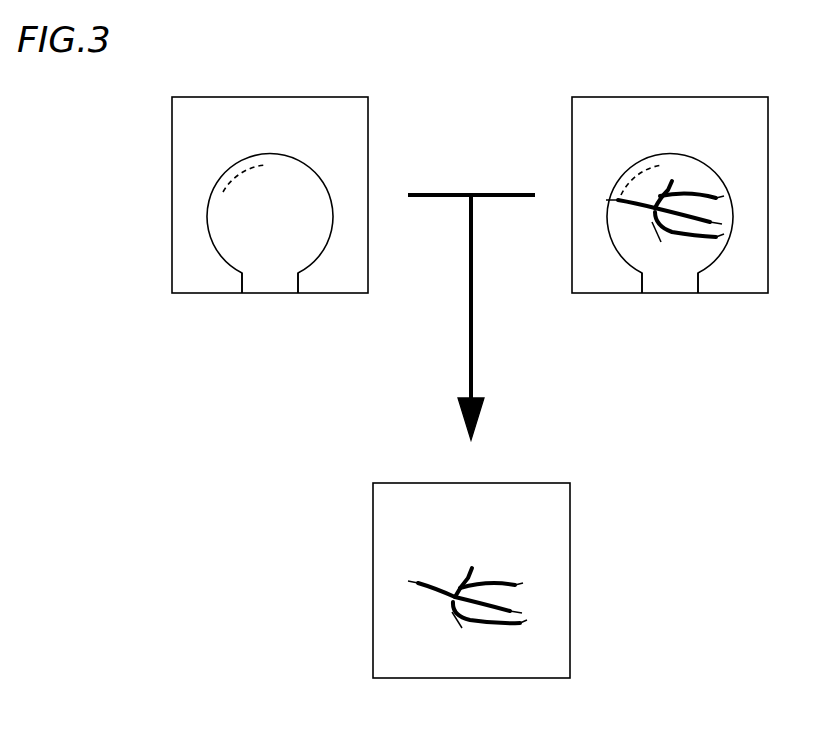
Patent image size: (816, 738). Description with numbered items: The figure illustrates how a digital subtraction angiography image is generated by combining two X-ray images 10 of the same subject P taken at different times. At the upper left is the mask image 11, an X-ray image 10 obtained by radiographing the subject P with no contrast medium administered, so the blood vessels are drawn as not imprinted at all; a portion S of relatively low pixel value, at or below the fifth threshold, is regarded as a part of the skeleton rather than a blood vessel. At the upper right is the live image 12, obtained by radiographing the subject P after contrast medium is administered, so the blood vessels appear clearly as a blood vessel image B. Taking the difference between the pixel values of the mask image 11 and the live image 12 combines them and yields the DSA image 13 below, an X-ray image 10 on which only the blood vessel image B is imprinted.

The X-ray image 10 is at (457, 345).
The mask image 11 is at (186, 81).
The live image 12 is at (586, 81).
The DSA image 13 is at (386, 466).
The portion having a relatively low pixel value S is at (243, 162).
The subject P is at (232, 278).
The blood vessel image B is at (631, 216).